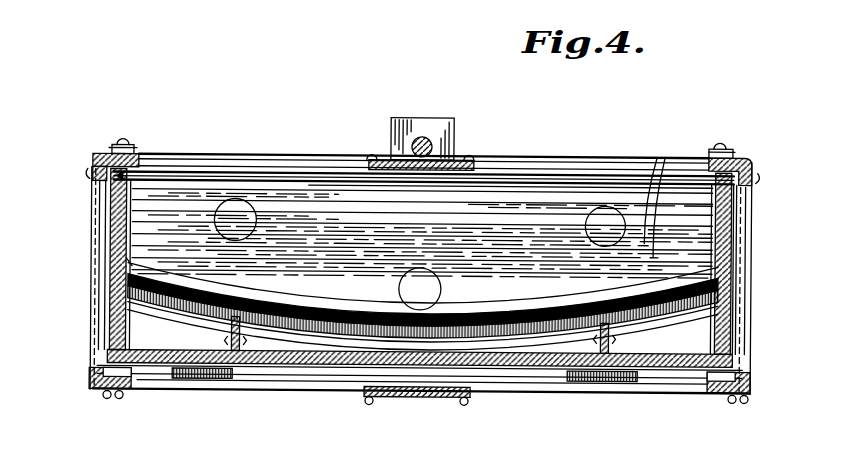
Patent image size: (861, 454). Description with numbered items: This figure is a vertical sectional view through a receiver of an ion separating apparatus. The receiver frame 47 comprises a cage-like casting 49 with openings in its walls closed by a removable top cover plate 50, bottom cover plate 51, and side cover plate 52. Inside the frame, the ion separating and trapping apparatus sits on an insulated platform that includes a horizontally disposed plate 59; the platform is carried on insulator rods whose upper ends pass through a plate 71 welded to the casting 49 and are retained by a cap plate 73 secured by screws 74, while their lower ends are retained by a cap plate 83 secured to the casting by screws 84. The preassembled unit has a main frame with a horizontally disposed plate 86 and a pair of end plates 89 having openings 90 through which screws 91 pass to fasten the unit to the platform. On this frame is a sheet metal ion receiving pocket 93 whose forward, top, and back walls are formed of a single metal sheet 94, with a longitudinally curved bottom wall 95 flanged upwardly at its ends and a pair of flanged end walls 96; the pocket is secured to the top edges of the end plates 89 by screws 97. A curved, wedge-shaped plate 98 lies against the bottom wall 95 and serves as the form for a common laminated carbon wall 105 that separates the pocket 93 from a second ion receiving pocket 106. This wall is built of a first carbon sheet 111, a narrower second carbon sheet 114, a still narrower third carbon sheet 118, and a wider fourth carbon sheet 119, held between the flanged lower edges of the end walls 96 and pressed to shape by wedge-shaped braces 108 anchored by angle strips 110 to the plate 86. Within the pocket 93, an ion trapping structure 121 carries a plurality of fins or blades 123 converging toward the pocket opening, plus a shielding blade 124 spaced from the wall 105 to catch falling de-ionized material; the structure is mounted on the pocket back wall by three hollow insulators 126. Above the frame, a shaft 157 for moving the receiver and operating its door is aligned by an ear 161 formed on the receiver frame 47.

The receiver frame 47 is at (754, 152).
The cage-like casting 49 is at (735, 360).
The top cover plate 50 is at (232, 147).
The bottom cover plate 51 is at (156, 384).
The side cover plate 52 is at (86, 295).
The horizontally disposed plate 59 is at (478, 364).
The plate 71 is at (100, 144).
The cap plate 73 is at (110, 139).
The screws 74 is at (118, 139).
The cap plate 83 is at (100, 392).
The screws 84 is at (108, 393).
The horizontally disposed plate 86 is at (580, 374).
The end plates 89 is at (110, 229).
The openings 90 is at (95, 198).
The screws 91 is at (103, 202).
The ion receiving pocket 93 is at (541, 190).
The metal sheet 94 is at (182, 178).
The bottom wall 95 is at (272, 324).
The end walls 96 is at (110, 250).
The screws 97 is at (88, 154).
The wedge-shaped plate 98 is at (120, 268).
The laminated carbon wall 105 is at (400, 342).
The second ion receiving pocket 106 is at (675, 341).
The wedge-shaped braces 108 is at (230, 358).
The angle strips 110 is at (222, 335).
The first carbon sheet 111 is at (350, 344).
The second carbon sheet 114 is at (510, 360).
The third carbon sheet 118 is at (320, 344).
The fourth carbon sheet 119 is at (550, 362).
The ion trapping structure 121 is at (324, 194).
The fins or blades 123 is at (660, 152).
The shielding blade 124 is at (300, 344).
The hollow insulators 126 is at (246, 203).
The shaft 157 is at (420, 134).
The ear 161 is at (396, 110).